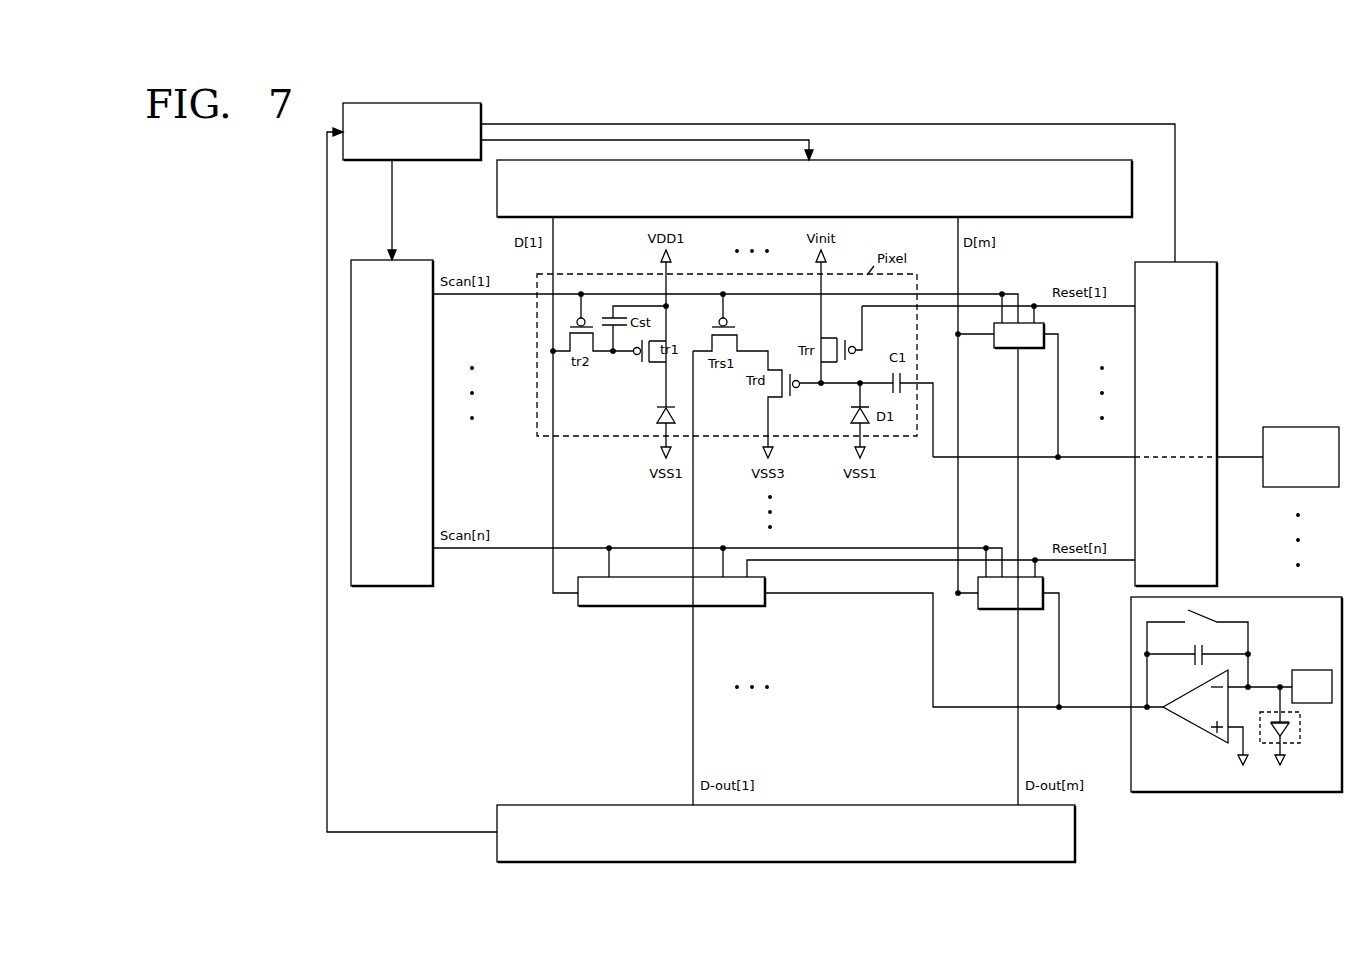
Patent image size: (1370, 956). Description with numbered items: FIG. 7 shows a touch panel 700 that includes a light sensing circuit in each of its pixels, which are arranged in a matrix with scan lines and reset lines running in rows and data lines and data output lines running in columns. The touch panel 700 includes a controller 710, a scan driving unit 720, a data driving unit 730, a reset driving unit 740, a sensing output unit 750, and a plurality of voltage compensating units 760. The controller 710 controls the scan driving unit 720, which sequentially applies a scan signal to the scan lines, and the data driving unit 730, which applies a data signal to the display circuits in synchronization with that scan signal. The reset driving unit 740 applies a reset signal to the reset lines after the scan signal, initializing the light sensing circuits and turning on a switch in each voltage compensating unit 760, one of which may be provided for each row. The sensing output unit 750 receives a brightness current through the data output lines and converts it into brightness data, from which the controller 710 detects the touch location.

The touch panel 700 is at (1252, 137).
The controller 710 is at (413, 103).
The scan driving unit 720 is at (403, 262).
The data driving unit 730 is at (903, 160).
The reset driving unit 740 is at (1190, 262).
The sensing output unit 750 is at (872, 805).
The voltage compensating unit 760 is at (1268, 597).